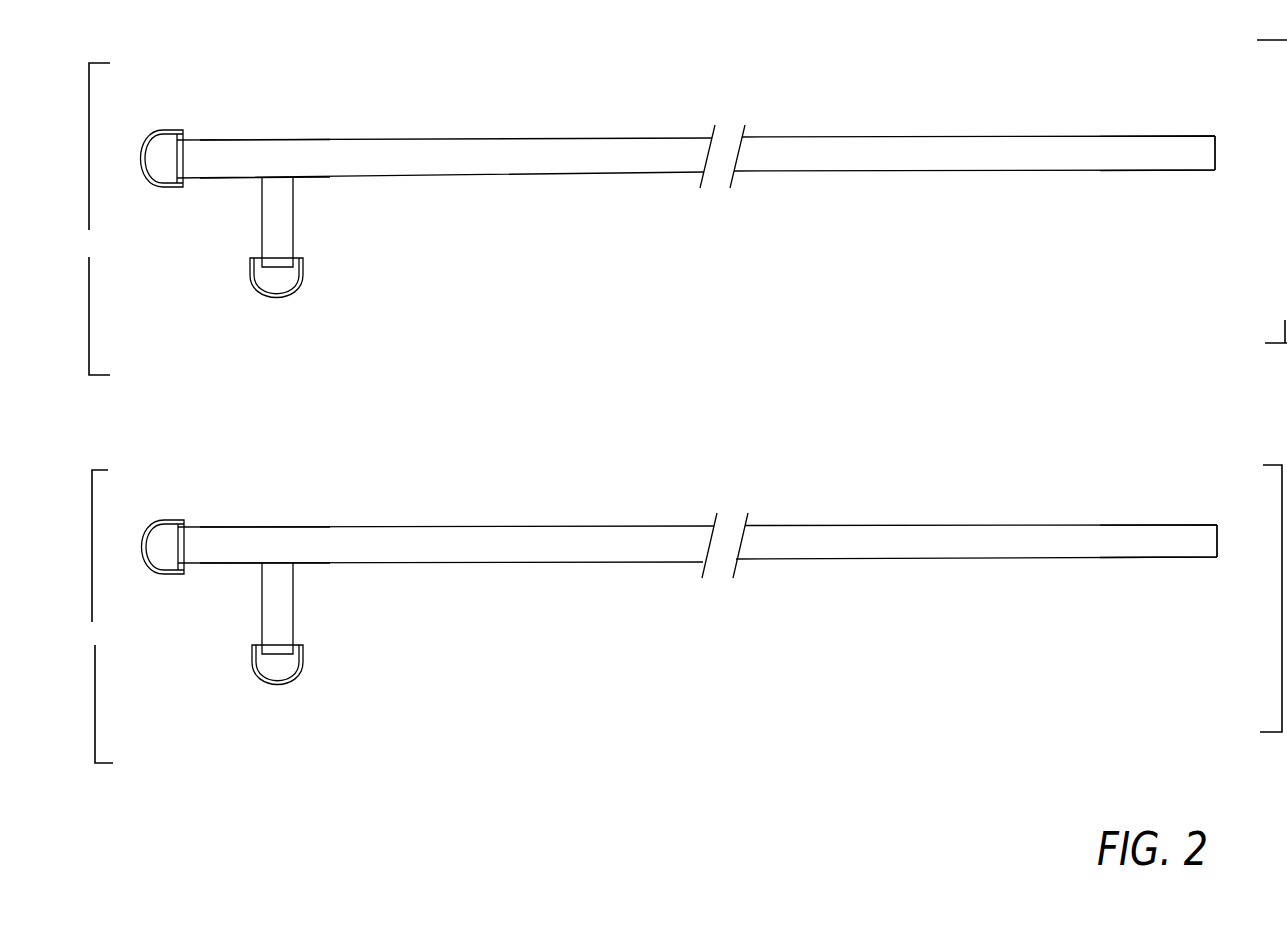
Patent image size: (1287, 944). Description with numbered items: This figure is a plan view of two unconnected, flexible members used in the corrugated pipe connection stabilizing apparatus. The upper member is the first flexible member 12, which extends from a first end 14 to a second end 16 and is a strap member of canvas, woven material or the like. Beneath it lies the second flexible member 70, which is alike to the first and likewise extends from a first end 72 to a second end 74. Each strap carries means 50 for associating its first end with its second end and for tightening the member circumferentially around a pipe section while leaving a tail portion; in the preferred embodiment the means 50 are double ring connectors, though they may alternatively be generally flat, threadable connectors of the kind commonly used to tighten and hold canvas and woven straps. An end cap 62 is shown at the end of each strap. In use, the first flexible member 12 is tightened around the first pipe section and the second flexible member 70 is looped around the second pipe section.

The first flexible member 12 is at (510, 138).
The first end 14 is at (330, 150).
The second end 16 is at (1160, 135).
The end cap 62 is at (167, 188).
The means for associating and tightening 50 is at (277, 298).
The second flexible member 70 is at (573, 562).
The first end 72 is at (310, 555).
The second end 74 is at (1173, 550).